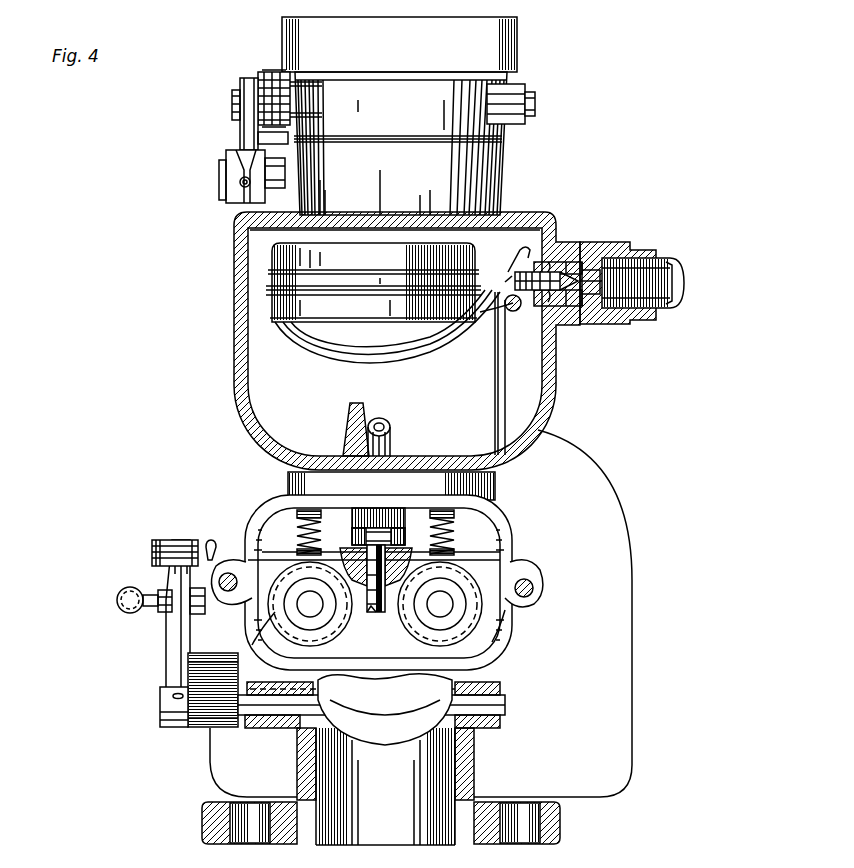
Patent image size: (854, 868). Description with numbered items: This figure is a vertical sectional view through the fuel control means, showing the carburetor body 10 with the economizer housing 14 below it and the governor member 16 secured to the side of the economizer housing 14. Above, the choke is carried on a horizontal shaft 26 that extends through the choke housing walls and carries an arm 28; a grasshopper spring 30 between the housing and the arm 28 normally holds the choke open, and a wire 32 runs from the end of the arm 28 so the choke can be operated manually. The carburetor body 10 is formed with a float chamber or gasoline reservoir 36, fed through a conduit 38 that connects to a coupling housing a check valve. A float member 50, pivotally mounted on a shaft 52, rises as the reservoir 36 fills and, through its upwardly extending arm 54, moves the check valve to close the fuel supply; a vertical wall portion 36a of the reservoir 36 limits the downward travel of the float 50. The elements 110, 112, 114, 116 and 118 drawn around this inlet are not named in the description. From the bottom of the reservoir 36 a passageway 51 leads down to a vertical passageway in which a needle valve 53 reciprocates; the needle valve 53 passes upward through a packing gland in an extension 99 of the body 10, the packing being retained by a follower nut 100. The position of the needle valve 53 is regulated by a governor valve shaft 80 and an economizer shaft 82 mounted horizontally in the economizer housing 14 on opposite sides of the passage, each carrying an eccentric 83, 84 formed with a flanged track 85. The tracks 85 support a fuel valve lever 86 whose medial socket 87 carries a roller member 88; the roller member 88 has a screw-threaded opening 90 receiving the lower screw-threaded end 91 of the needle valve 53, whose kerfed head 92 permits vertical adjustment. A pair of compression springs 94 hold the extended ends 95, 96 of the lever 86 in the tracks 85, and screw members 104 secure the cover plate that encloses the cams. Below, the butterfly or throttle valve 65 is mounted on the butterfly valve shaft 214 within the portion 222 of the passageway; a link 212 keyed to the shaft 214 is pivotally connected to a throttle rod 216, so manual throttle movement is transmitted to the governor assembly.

The carburetor body 10 is at (538, 432).
The economizer housing 14 is at (470, 792).
The governor member 16 is at (634, 650).
The horizontal shaft 26 is at (528, 100).
The arm 28 is at (240, 142).
The grasshopper spring 30 is at (258, 75).
The wire 32 is at (240, 182).
The float chamber 36 is at (478, 395).
The vertical wall portion 36a is at (365, 403).
The conduit 38 is at (670, 262).
The float member 50 is at (272, 320).
The passageway 51 is at (386, 421).
The shaft 52 is at (534, 362).
The needle valve 53 is at (392, 528).
The upwardly extending arm 54 is at (520, 275).
The butterfly valve 65 is at (420, 734).
The governor valve shaft 80 is at (437, 612).
The economizer shaft 82 is at (318, 617).
The eccentric 83 is at (308, 630).
The eccentric 84 is at (440, 630).
The flanged track 85 is at (256, 628).
The fuel valve lever 86 is at (450, 556).
The medial socket 87 is at (322, 604).
The roller member 88 is at (428, 598).
The screw-threaded opening 90 is at (355, 548).
The lower screw-threaded end 91 is at (396, 548).
The kerfed head 92 is at (373, 614).
The compression springs 94 is at (298, 522).
The extended end 95 is at (250, 560).
The extended end 96 is at (508, 542).
The extension 99 is at (358, 520).
The follower nut 100 is at (380, 508).
The screw members 104 is at (228, 572).
The valve seat 110 is at (625, 326).
The seat bushing 112 is at (562, 308).
The nut 114 is at (584, 258).
The washer 116 is at (566, 262).
The packing 118 is at (548, 262).
The link 212 is at (176, 652).
The butterfly valve shaft 214 is at (274, 716).
The throttle rod 216 is at (117, 600).
The passageway portion 222 is at (428, 770).